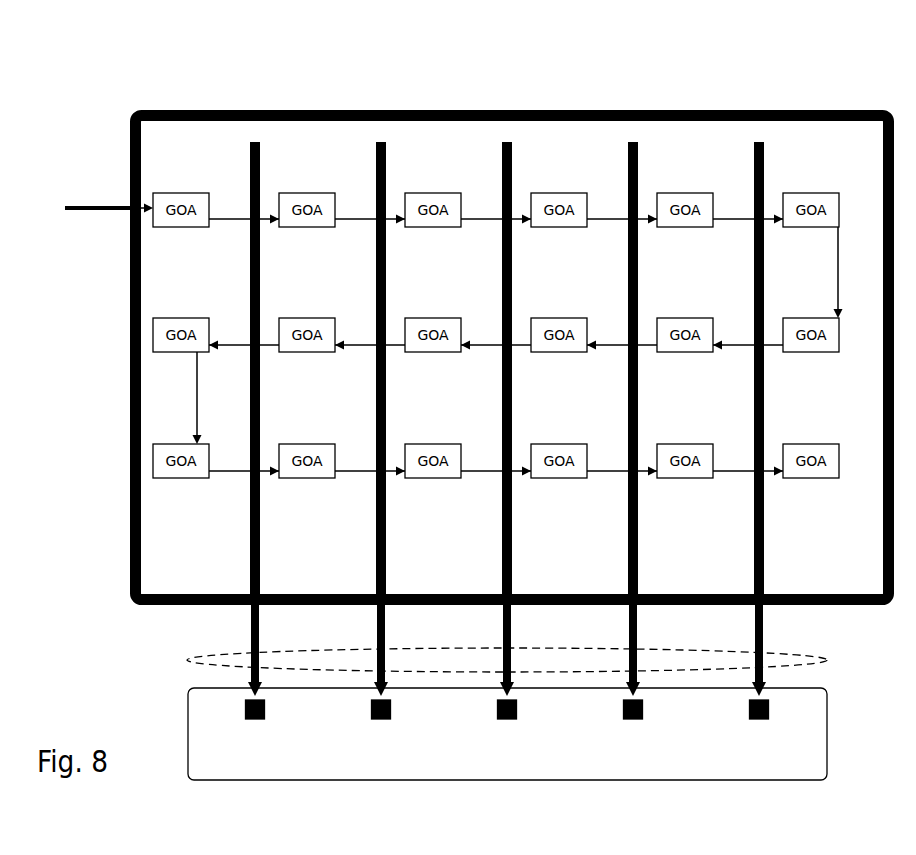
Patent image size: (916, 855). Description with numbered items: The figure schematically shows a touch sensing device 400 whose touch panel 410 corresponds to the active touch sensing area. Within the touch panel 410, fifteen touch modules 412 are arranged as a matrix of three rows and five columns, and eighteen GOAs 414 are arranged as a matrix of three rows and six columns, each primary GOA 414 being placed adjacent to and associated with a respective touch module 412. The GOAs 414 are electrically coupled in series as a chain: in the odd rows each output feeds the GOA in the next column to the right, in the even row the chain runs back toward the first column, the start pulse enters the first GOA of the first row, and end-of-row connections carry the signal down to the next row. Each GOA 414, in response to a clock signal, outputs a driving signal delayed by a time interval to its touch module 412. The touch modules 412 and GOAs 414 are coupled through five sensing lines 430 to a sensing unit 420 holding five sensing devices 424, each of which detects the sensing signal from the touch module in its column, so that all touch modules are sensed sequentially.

The touch sensing device 400 is at (550, 41).
The touch panel 410 is at (842, 155).
The touch module 412 is at (374, 215).
The GOA 414 is at (277, 202).
The sensing unit 420 is at (817, 760).
The sensing device 424 is at (257, 721).
The sensing line 430 is at (542, 658).